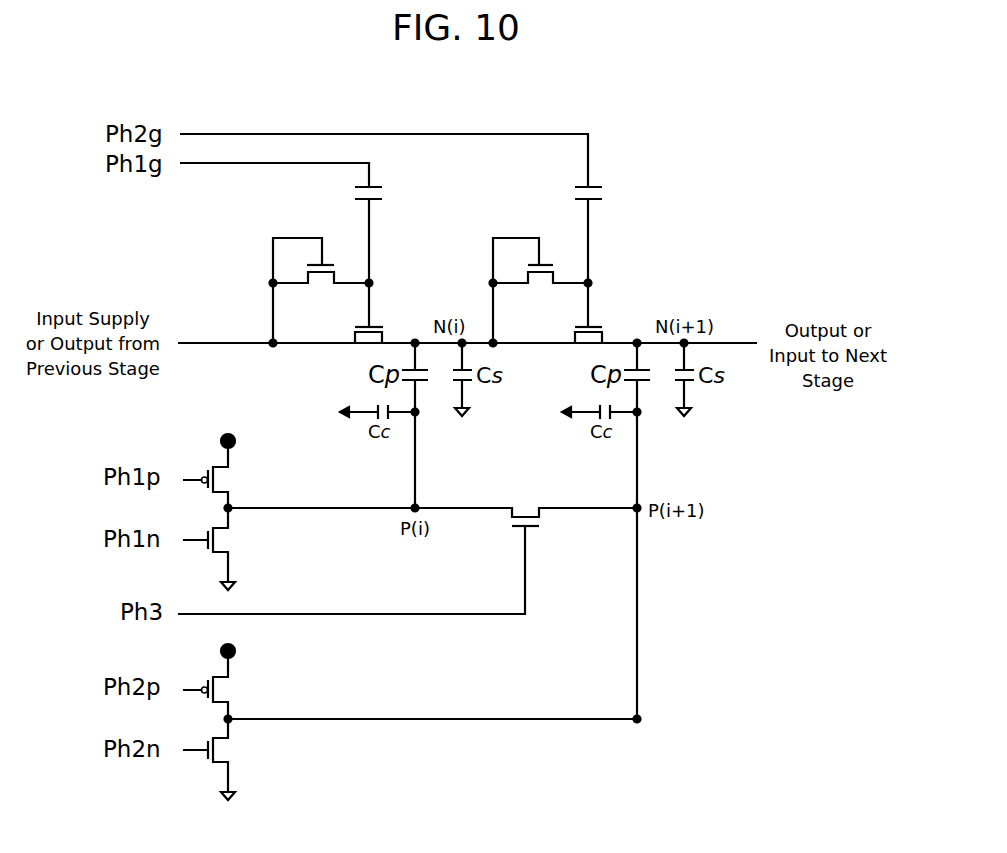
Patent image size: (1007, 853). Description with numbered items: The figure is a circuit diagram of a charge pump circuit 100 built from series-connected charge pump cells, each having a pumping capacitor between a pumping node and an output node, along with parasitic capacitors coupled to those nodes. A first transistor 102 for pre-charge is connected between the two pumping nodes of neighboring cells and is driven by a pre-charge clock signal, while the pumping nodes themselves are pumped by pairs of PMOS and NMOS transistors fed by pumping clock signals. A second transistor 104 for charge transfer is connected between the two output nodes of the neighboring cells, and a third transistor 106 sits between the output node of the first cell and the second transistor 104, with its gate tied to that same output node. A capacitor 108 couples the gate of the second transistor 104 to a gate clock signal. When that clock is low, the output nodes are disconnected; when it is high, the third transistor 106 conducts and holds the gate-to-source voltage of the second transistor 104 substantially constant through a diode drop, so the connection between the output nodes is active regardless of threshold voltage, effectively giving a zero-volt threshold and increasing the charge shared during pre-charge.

The charge pump circuit 100 is at (760, 155).
The first transistor 102 is at (526, 504).
The second transistor 104 is at (590, 346).
The third transistor 106 is at (541, 292).
The capacitor 108 is at (608, 234).